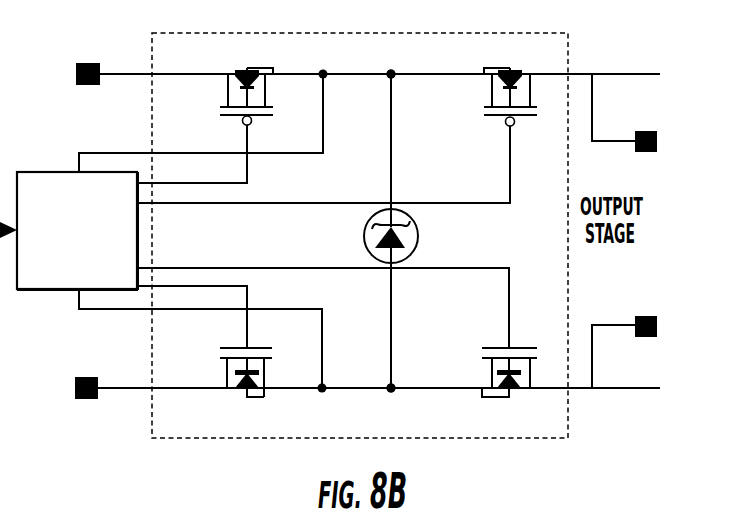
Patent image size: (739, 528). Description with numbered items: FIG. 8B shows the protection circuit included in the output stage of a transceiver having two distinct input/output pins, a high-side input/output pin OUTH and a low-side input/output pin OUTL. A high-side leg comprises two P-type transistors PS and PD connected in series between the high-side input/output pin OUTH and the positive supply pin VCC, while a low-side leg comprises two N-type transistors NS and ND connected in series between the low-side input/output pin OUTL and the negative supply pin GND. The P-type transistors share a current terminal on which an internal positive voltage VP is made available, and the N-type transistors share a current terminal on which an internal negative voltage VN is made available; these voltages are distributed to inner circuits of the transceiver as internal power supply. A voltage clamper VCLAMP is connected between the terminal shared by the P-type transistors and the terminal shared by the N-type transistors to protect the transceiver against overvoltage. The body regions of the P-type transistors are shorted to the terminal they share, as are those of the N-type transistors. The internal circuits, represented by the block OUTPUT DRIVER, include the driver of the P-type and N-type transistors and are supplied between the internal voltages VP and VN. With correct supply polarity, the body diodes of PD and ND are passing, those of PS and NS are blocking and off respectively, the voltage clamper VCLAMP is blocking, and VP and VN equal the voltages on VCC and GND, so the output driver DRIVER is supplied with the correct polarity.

The output driver DRIVER is at (69, 231).
The positive supply pin VCC is at (66, 73).
The negative supply pin GND is at (65, 390).
The internal positive voltage VP is at (393, 59).
The internal negative voltage VN is at (391, 406).
The P-type transistor PD is at (223, 96).
The P-type transistor PS is at (490, 97).
The N-type transistor ND is at (227, 372).
The N-type transistor NS is at (490, 372).
The voltage clamper VCLAMP is at (425, 235).
The high-side input/output pin OUTH is at (649, 116).
The low-side input/output pin OUTL is at (647, 349).